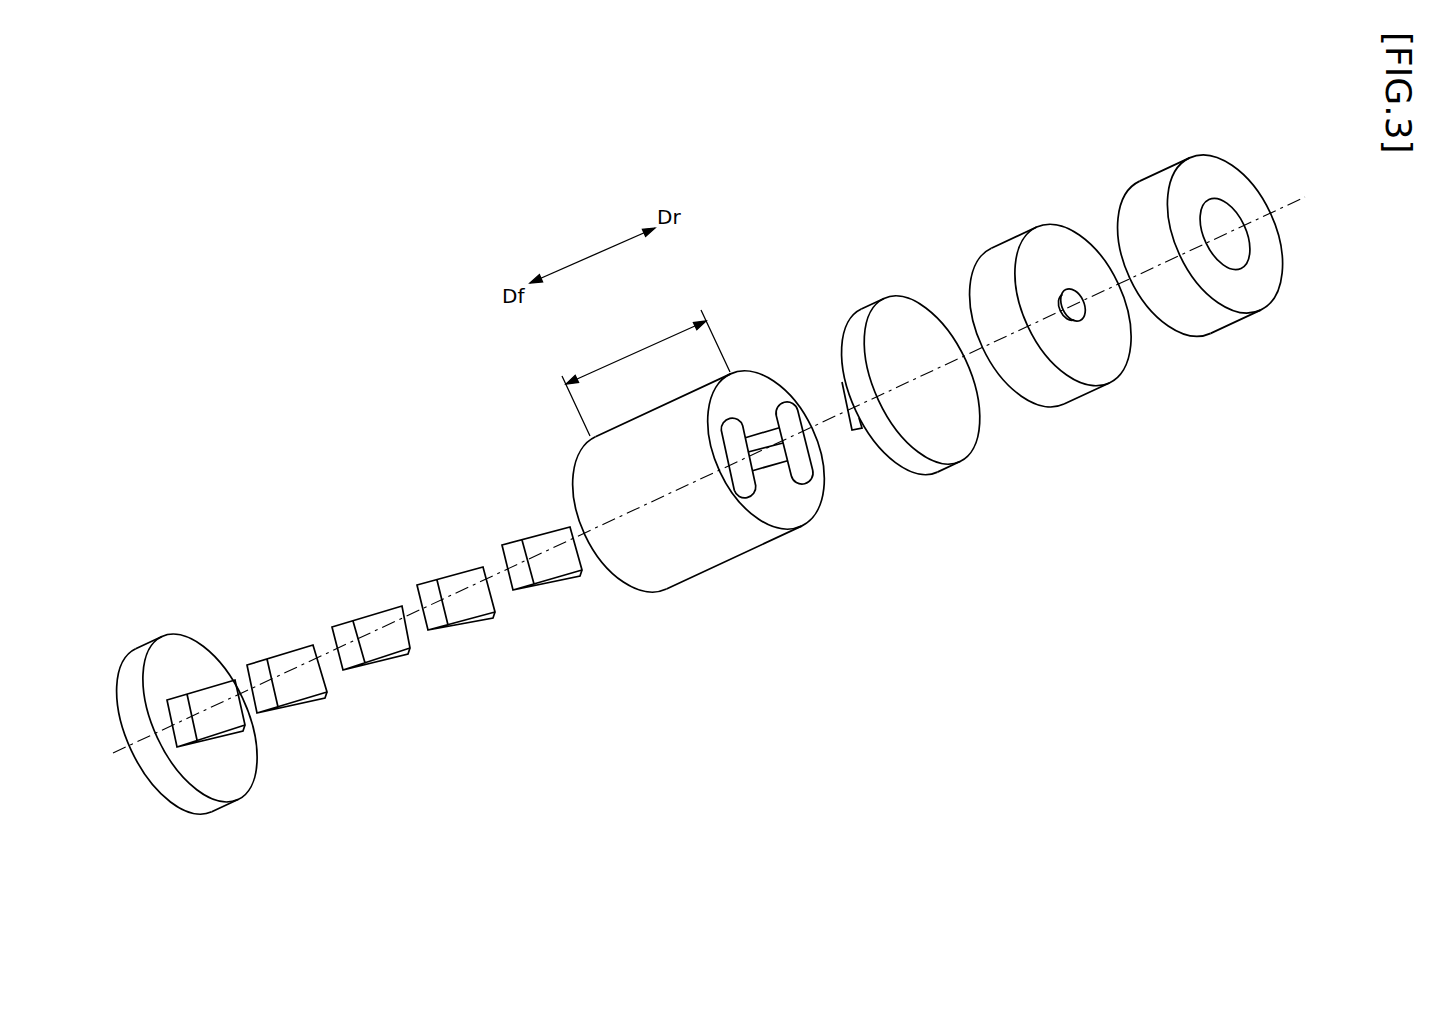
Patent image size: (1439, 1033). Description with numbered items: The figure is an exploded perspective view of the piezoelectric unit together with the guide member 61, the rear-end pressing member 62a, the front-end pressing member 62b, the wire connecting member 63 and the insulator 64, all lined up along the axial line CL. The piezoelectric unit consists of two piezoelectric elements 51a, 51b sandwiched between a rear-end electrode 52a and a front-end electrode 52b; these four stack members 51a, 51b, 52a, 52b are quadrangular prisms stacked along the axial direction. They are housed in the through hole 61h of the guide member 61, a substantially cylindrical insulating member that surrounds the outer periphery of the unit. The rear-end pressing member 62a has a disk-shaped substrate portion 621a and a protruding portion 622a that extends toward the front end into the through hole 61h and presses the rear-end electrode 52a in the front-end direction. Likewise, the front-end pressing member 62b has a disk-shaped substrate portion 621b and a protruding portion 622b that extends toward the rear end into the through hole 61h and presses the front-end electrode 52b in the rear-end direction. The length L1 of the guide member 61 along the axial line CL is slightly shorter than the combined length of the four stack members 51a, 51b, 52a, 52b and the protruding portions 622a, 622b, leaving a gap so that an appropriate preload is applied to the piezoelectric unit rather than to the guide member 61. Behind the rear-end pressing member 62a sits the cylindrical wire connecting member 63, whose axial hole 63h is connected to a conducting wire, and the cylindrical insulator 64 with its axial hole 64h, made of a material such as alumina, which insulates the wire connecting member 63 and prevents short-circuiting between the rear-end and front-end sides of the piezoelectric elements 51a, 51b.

The piezoelectric element 51a is at (465, 567).
The piezoelectric element 51b is at (367, 607).
The rear-end electrode 52a is at (553, 528).
The front-end electrode 52b is at (302, 652).
The guide member 61 is at (701, 483).
The through hole 61h is at (773, 481).
The rear-end pressing member 62a is at (892, 405).
The front-end pressing member 62b is at (220, 729).
The substrate portion 621a is at (903, 458).
The substrate portion 621b is at (250, 766).
The protruding portion 622a is at (843, 392).
The protruding portion 622b is at (207, 683).
The wire connecting member 63 is at (1054, 314).
The axial hole 63h is at (1068, 293).
The insulator 64 is at (1202, 245).
The axial hole 64h is at (1229, 211).
The axial line CL is at (1288, 211).
The length of the guide member L1 is at (646, 373).